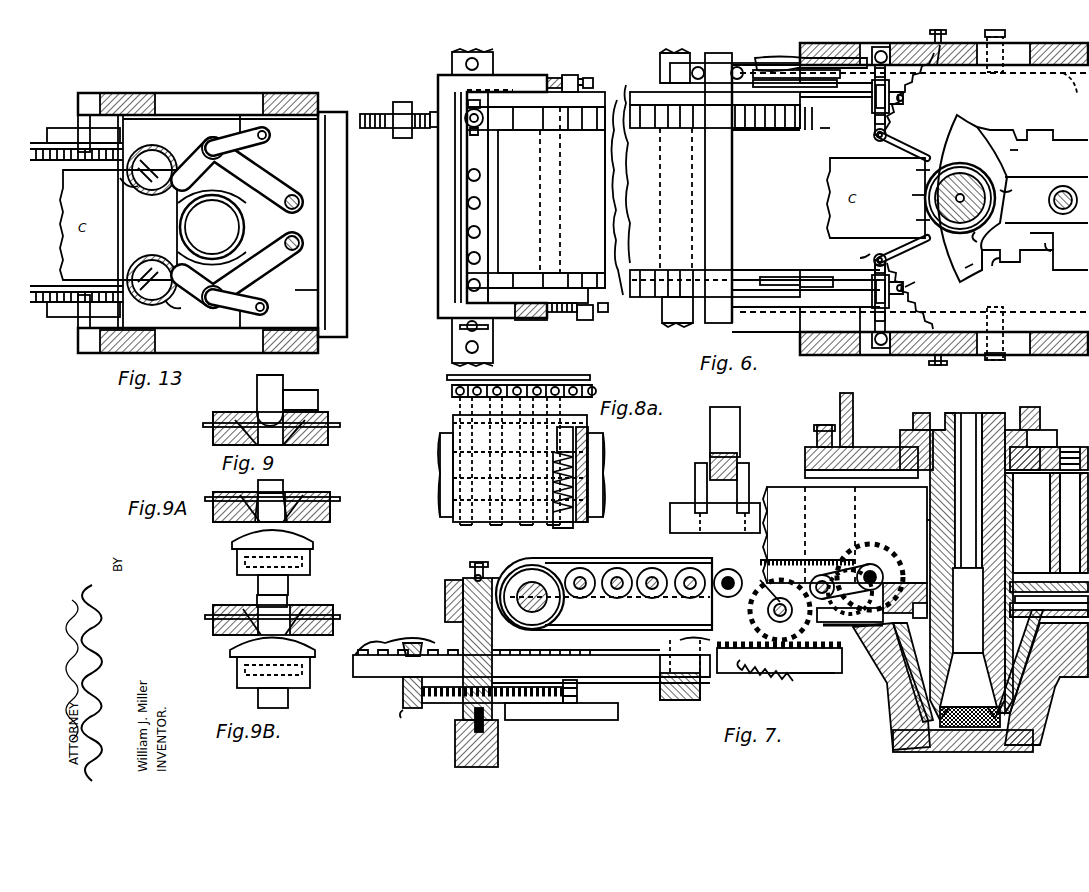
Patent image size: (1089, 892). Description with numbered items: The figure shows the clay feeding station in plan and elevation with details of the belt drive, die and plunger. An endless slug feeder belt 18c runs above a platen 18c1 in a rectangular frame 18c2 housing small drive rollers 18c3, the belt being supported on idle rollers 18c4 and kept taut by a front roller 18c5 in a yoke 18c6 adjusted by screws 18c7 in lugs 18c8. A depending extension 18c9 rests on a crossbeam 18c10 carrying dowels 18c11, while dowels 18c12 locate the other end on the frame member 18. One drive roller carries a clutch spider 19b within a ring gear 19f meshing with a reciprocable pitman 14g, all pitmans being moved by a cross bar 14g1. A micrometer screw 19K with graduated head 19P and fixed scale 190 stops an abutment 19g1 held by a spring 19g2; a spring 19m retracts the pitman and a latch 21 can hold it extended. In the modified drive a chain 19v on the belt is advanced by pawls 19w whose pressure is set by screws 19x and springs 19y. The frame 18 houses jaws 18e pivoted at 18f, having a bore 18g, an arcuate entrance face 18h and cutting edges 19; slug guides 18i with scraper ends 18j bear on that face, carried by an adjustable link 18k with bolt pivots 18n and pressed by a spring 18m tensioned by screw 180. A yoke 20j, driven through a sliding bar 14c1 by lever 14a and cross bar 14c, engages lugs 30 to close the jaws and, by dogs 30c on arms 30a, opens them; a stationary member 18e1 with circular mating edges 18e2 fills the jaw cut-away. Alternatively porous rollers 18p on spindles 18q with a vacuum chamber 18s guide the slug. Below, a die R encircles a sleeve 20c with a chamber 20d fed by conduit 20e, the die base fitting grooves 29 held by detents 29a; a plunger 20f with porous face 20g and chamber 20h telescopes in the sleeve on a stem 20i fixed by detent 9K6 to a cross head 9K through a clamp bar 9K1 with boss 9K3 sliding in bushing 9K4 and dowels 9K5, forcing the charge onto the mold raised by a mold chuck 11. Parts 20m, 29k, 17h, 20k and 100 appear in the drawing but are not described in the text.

In FIG. 13, the slug feeder belt 18c is at (60, 205).
In FIG. 6, the slug feeder belt 18c is at (623, 207).
In FIG. 7, the slug feeder belt 18c is at (660, 556).
In FIG. 13, the vertical bore 18g is at (212, 227).
In FIG. 6, the vertical bore 18g is at (960, 191).
In FIG. 13, the pivots of link 18n is at (152, 170).
In FIG. 6, the pivots of link 18n is at (852, 259).
In FIG. 13, the spindle 18q is at (152, 280).
In FIG. 13, the vacuum chamber 18s is at (123, 188).
In FIG. 13, the guide rollers 18p is at (181, 309).
In FIG. 13, the jaws 18e is at (237, 222).
In FIG. 6, the jaws 18e is at (965, 122).
In FIG. 13, the pivot pin 18f is at (290, 214).
In FIG. 6, the pivot pin 18f is at (1050, 209).
In FIG. 7, the pivot pin 18f is at (1052, 518).
In FIG. 13, the link 20m is at (268, 308).
In FIG. 13, the reciprocable yoke 20j is at (310, 296).
In FIG. 6, the reciprocable yoke 20j is at (998, 255).
In FIG. 6, the pitman 14g is at (399, 116).
In FIG. 8A, the pitman 14g is at (598, 504).
In FIG. 7, the pitman 14g is at (454, 651).
In FIG. 6, the latch 21 is at (479, 105).
In FIG. 7, the latch 21 is at (477, 559).
In FIG. 6, the front belt roller 18c5 is at (526, 274).
In FIG. 7, the front belt roller 18c5 is at (566, 612).
In FIG. 6, the screws 18c7 is at (555, 77).
In FIG. 6, the lugs 18c8 is at (584, 74).
In FIG. 6, the rectangular frame 18c2 is at (638, 332).
In FIG. 7, the rectangular frame 18c2 is at (462, 577).
In FIG. 6, the crossbeam 18c10 is at (494, 347).
In FIG. 7, the crossbeam 18c10 is at (498, 750).
In FIG. 6, the cross bar 14g1 is at (680, 335).
In FIG. 7, the cross bar 14g1 is at (668, 710).
In FIG. 6, the cross bar 14c is at (732, 222).
In FIG. 7, the cross bar 14c is at (709, 457).
In FIG. 6, the sliding bar 14c1 is at (788, 58).
In FIG. 6, the ring gear 19f is at (770, 128).
In FIG. 7, the ring gear 19f is at (812, 663).
In FIG. 6, the frame member 18 is at (796, 343).
In FIG. 7, the frame member 18 is at (806, 448).
In FIG. 6, the screw 180 is at (948, 199).
In FIG. 7, the screw 180 is at (1049, 449).
In FIG. 6, the detents 29a is at (1000, 38).
In FIG. 6, the grooves 29 is at (1000, 356).
In FIG. 6, the adjustable link 18k is at (873, 118).
In FIG. 6, the spring 18m is at (917, 187).
In FIG. 6, the slug guides 18i is at (898, 148).
In FIG. 6, the drive rollers 18c3 is at (822, 126).
In FIG. 7, the drive rollers 18c3 is at (738, 640).
In FIG. 6, the scraper ends 18j is at (914, 169).
In FIG. 6, the cutting edges 19 is at (911, 195).
In FIG. 6, the entrance end of jaws 18h is at (913, 220).
In FIG. 6, the complementary member 18e1 is at (1021, 190).
In FIG. 6, the mating edges 18e2 is at (957, 240).
In FIG. 6, the dogs 30c is at (1021, 156).
In FIG. 6, the jaw arms 30a is at (1041, 241).
In FIG. 6, the jaw lugs 30 is at (963, 263).
In FIG. 6, the dowels 18c12 is at (928, 291).
In FIG. 8A, the chain 19v is at (596, 387).
In FIG. 8A, the pawls 19w is at (463, 409).
In FIG. 8A, the springs 19y is at (598, 462).
In FIG. 8A, the screws 19x is at (560, 528).
In FIG. 7, the lever 14a is at (710, 432).
In FIG. 7, the yoke 18c6 is at (445, 590).
In FIG. 7, the idle rollers 18c4 is at (632, 598).
In FIG. 7, the abutment 19g1 is at (402, 687).
In FIG. 7, the micrometer screw 19K is at (430, 704).
In FIG. 7, the spring 19g2 is at (415, 720).
In FIG. 7, the graduated head 19P is at (577, 691).
In FIG. 7, the fixed scale 190 is at (612, 706).
In FIG. 7, the dowels 18c11 is at (496, 727).
In FIG. 7, the depending extension 18c9 is at (496, 644).
In FIG. 7, the spring 19m is at (765, 682).
In FIG. 7, the platen 18c1 is at (886, 562).
In FIG. 7, the spider 19b is at (838, 602).
In FIG. 7, the guide bushing 9K4 is at (921, 475).
In FIG. 7, the clamp bar 9K1 is at (933, 420).
In FIG. 7, the plunger stem 20i is at (968, 413).
In FIG. 7, the cross head 9K is at (1044, 407).
In FIG. 7, the dowels 9K5 is at (1042, 434).
In FIG. 7, the boss 9K3 is at (1046, 593).
In FIG. 7, the detent 9K6 is at (1031, 523).
In FIG. 7, the sleeve 20c is at (1011, 537).
In FIG. 7, the bar 29k is at (1049, 592).
In FIG. 7, the plunger 20f is at (918, 537).
In FIG. 9, the plunger 20f is at (286, 376).
In FIG. 9A, the plunger 20f is at (285, 486).
In FIG. 9B, the plunger 20f is at (257, 602).
In FIG. 7, the chamber 20d is at (949, 643).
In FIG. 7, the plunger chamber 20h is at (1020, 661).
In FIG. 7, the trough 17h is at (861, 687).
In FIG. 7, the nozzle 20k is at (968, 680).
In FIG. 7, the porous face 20g is at (975, 697).
In FIG. 9, the mold chuck 11 is at (281, 429).
In FIG. 9, the die R is at (338, 421).
In FIG. 9A, the die R is at (331, 492).
In FIG. 9B, the die R is at (331, 607).
In FIG. 9A, the conduit 20e is at (284, 508).
In FIG. 9A, the bottle 100 is at (311, 564).
In FIG. 9B, the bottle 100 is at (237, 683).